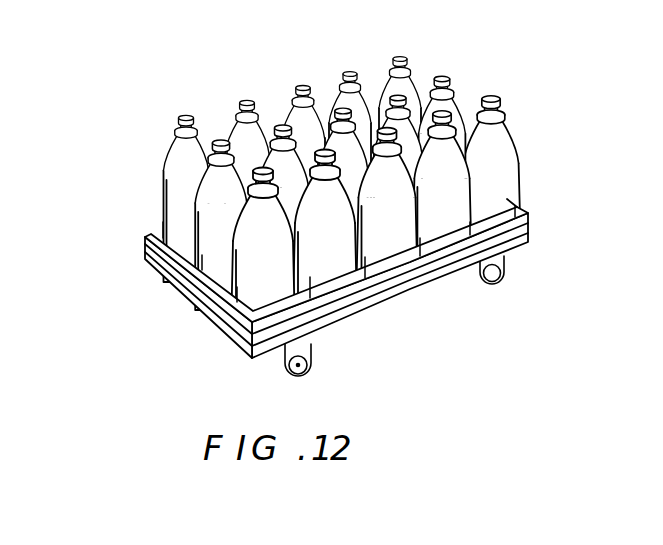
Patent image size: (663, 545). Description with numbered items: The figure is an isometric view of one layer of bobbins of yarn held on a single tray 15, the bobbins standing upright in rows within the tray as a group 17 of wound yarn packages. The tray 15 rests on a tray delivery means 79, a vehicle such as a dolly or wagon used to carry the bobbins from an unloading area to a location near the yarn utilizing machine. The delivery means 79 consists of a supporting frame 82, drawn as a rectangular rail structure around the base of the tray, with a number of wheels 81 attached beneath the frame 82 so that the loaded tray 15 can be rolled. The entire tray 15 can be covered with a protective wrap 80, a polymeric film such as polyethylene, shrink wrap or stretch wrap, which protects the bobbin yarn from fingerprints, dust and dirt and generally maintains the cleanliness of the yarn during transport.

The tray 15 is at (143, 241).
The bottles 17 is at (142, 110).
The tray delivery means 79 is at (511, 248).
The protective wrap 80 is at (521, 150).
The wheels 81 is at (497, 284).
The supporting frame 82 is at (386, 298).